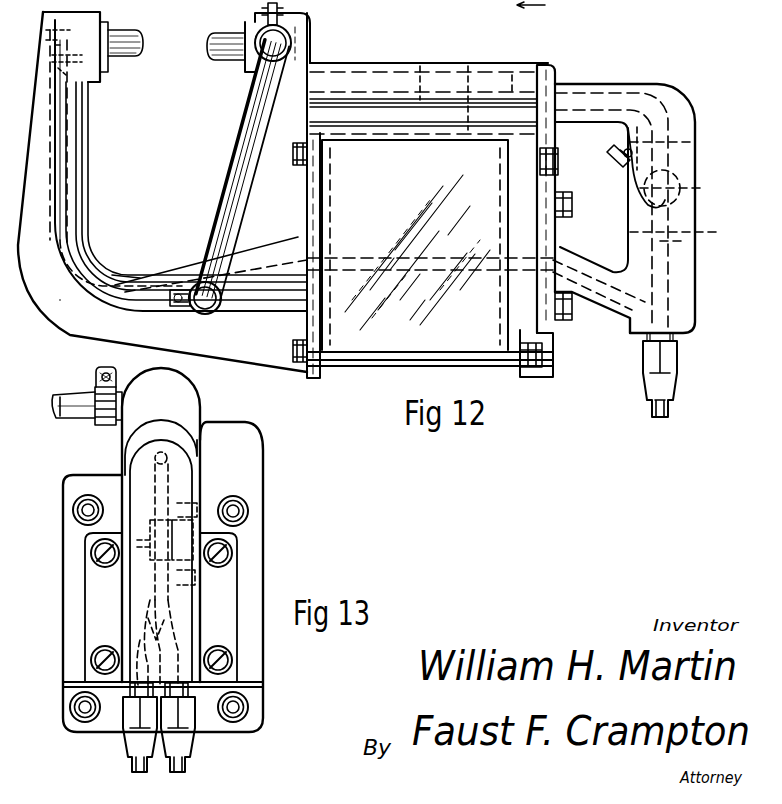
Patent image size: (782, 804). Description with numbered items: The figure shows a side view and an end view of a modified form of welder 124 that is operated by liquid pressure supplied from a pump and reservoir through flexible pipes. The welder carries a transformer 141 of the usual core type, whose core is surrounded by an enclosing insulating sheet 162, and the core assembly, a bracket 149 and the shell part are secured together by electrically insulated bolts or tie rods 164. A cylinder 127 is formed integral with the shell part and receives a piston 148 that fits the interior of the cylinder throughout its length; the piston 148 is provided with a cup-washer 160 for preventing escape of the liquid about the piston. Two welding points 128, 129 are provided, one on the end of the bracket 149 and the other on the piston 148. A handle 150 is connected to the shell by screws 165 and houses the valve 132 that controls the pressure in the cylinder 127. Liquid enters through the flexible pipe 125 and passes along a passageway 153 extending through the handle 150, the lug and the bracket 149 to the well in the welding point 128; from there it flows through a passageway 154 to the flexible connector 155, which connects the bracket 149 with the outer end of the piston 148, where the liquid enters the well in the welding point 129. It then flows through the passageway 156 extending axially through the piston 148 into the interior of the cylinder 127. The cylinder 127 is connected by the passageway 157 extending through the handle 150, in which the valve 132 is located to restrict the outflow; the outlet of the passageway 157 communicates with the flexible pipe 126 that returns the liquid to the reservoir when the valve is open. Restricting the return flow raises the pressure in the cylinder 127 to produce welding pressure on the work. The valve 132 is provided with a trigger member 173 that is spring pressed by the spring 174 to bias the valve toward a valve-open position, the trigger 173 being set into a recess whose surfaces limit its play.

In FIG. 12, the welder 124 is at (523, 250).
In FIG. 12, the flexible pipe 125 is at (652, 410).
In FIG. 13, the flexible pipe 125 is at (136, 768).
In FIG. 13, the flexible pipe 126 is at (186, 768).
In FIG. 12, the cylinder 127 is at (517, 78).
In FIG. 12, the welding point 128 is at (135, 52).
In FIG. 12, the welding point 129 is at (228, 50).
In FIG. 12, the valve 132 is at (684, 188).
In FIG. 13, the valve 132 is at (157, 547).
In FIG. 12, the transformer 141 is at (162, 192).
In FIG. 12, the piston 148 is at (370, 80).
In FIG. 12, the bracket 149 is at (165, 272).
In FIG. 12, the handle 150 is at (675, 282).
In FIG. 13, the handle 150 is at (181, 487).
In FIG. 12, the passageway 153 is at (266, 262).
In FIG. 13, the passageway 153 is at (143, 657).
In FIG. 12, the passageway 154 is at (90, 270).
In FIG. 12, the flexible connector 155 is at (245, 125).
In FIG. 13, the flexible connector 155 is at (74, 410).
In FIG. 12, the passageway 156 is at (420, 66).
In FIG. 12, the passageway 157 is at (600, 97).
In FIG. 13, the passageway 157 is at (162, 623).
In FIG. 12, the cup-washer 160 is at (468, 66).
In FIG. 12, the insulating sheet 162 is at (383, 340).
In FIG. 12, the insulated bolts or tie rods 164 is at (296, 160).
In FIG. 13, the insulated bolts or tie rods 164 is at (72, 511).
In FIG. 12, the screws 165 is at (574, 205).
In FIG. 13, the screws 165 is at (232, 553).
In FIG. 12, the trigger member 173 is at (618, 168).
In FIG. 12, the spring 174 is at (612, 157).